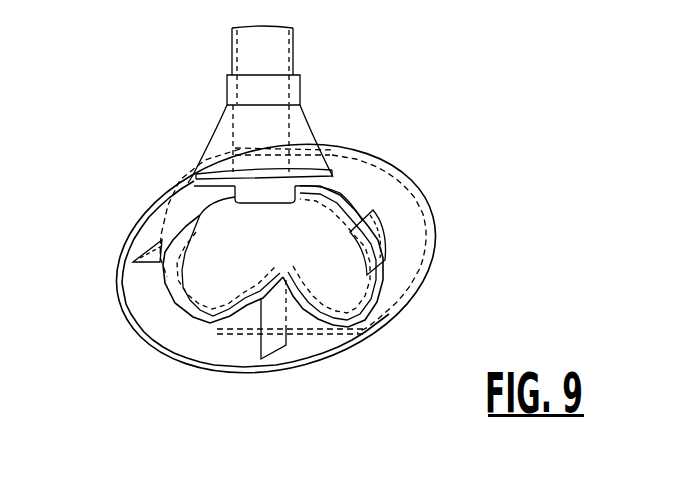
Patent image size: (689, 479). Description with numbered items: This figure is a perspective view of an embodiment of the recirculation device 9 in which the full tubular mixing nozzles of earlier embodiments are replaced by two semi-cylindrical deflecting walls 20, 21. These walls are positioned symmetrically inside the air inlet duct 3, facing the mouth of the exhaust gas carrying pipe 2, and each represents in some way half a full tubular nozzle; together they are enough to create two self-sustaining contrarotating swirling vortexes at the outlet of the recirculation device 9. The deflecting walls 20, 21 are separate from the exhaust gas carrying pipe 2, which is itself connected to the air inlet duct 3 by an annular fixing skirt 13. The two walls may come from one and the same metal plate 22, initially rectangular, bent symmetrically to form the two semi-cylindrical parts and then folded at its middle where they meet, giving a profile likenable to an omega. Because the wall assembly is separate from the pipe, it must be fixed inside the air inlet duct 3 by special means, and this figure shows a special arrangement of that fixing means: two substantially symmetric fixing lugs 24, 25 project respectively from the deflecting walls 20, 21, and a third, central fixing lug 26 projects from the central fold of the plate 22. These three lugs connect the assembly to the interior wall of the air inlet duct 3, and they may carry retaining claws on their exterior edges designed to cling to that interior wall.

The exhaust gas carrying pipe 2 is at (250, 45).
The annular fixing skirt 13 is at (305, 130).
The recirculation device 9 is at (158, 173).
The air inlet duct 3 is at (383, 190).
The semi-cylindrical deflecting wall 20 is at (176, 312).
The semi-cylindrical deflecting wall 21 is at (333, 317).
The metal plate 22 is at (207, 338).
The fixing lug 24 is at (148, 255).
The fixing lug 25 is at (405, 242).
The central fixing lug 26 is at (275, 342).